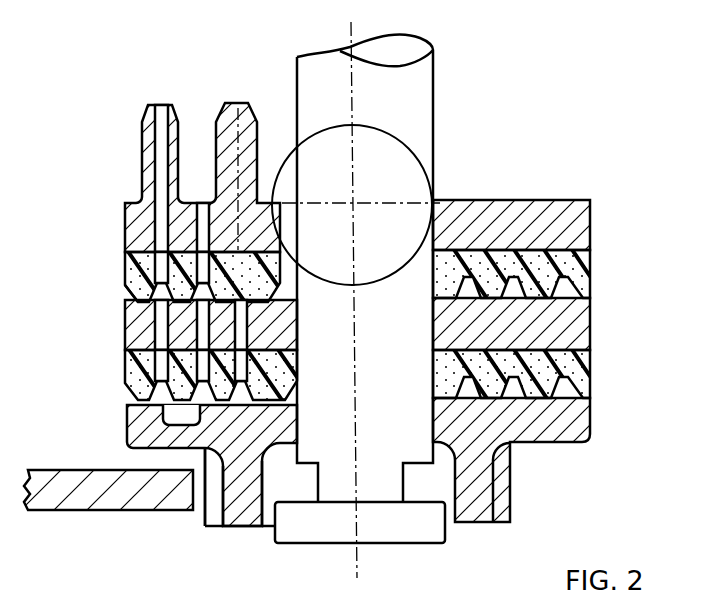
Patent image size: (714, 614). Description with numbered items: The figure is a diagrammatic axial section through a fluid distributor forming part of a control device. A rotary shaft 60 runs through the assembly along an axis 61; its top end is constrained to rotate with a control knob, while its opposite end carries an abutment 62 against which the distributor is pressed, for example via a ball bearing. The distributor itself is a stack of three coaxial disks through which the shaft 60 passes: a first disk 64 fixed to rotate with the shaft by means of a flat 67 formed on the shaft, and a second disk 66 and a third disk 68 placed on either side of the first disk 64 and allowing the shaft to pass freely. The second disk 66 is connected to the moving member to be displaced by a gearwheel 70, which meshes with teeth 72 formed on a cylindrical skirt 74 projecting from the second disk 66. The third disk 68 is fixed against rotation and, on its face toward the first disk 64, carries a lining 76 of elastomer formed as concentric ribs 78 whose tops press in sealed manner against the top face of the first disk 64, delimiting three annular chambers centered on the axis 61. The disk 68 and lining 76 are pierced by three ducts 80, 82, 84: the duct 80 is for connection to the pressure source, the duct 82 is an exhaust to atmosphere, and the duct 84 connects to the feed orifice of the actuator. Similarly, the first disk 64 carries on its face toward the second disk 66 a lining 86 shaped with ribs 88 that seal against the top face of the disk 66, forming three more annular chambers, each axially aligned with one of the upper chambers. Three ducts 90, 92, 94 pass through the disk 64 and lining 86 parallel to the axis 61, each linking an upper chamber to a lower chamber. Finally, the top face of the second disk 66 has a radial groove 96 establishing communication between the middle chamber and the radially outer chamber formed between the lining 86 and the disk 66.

The rotary shaft 60 is at (433, 142).
The axis 61 is at (352, 92).
The abutment 62 is at (387, 545).
The first disk 64 is at (590, 330).
The second disk 66 is at (590, 422).
The flat 67 is at (286, 170).
The third disk 68 is at (590, 216).
The gearwheel 70 is at (110, 493).
The teeth 72 is at (215, 515).
The cylindrical skirt 74 is at (248, 516).
The lining 76 is at (590, 270).
The concentric ribs 78 is at (130, 291).
The duct 80 is at (254, 165).
The duct 82 is at (197, 200).
The duct 84 is at (153, 153).
The lining 86 is at (590, 372).
The ribs 88 is at (127, 410).
The duct 90 is at (243, 340).
The duct 92 is at (148, 372).
The duct 94 is at (152, 341).
The radial groove 96 is at (180, 416).